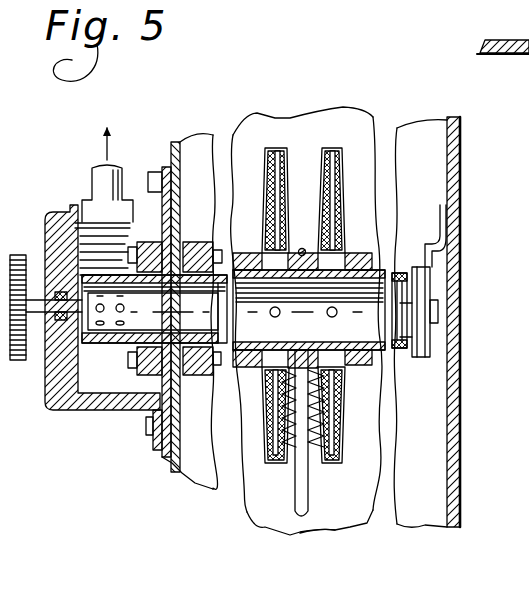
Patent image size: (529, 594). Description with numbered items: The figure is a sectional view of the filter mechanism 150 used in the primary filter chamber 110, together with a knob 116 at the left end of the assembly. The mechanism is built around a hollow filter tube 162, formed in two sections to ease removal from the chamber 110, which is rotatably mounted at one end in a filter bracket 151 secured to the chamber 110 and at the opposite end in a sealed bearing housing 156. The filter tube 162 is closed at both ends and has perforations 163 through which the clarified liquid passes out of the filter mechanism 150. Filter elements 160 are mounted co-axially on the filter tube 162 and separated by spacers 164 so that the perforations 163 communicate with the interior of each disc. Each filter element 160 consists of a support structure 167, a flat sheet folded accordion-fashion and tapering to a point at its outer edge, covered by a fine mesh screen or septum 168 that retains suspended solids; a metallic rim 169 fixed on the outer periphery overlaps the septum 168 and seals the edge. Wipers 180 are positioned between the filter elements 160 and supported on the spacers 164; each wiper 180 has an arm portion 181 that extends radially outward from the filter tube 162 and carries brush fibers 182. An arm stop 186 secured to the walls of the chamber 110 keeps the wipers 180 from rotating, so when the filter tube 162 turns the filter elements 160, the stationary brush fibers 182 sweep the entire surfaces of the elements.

The filter chamber 110 is at (172, 154).
The adjusting knob 116 is at (18, 368).
The filter mechanism 150 is at (216, 121).
The filter bracket 151 is at (425, 262).
The sealed bearing housing 156 is at (72, 200).
The filter element 160 is at (307, 303).
The filter tube 162 is at (402, 273).
The perforations 163 is at (331, 318).
The spacer 164 is at (303, 252).
The support structure 167 is at (343, 227).
The fine mesh screen or septum 168 is at (265, 228).
The metallic rim 169 is at (304, 301).
The wiper 180 is at (293, 502).
The arm portion 181 is at (331, 532).
The brush fibers 182 is at (317, 467).
The arm stop 186 is at (497, 38).